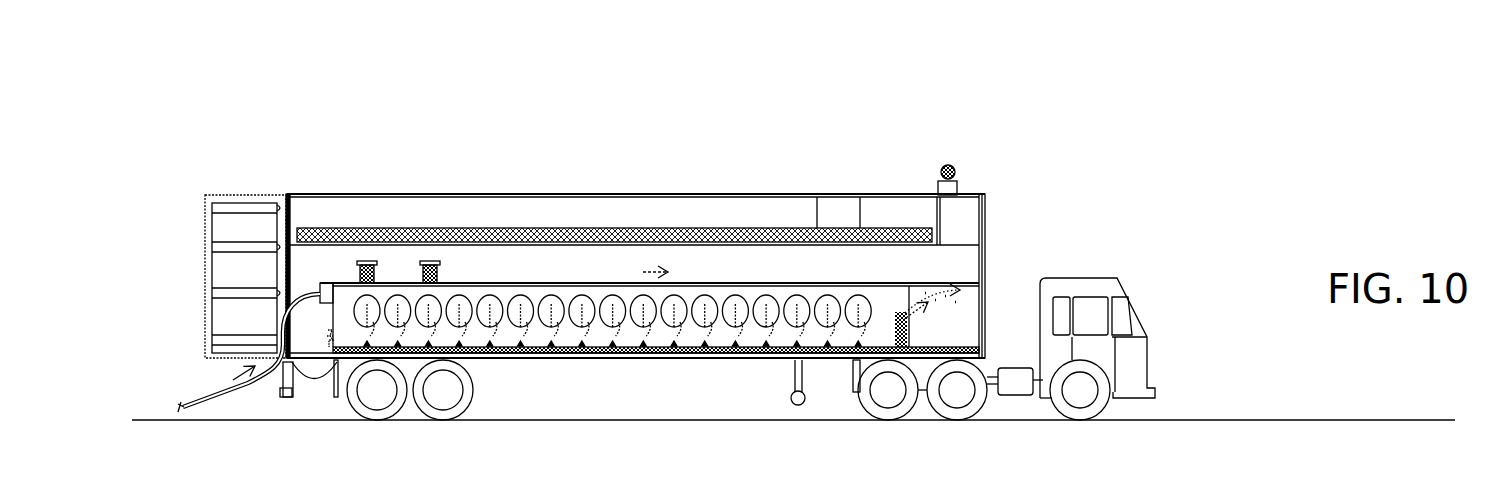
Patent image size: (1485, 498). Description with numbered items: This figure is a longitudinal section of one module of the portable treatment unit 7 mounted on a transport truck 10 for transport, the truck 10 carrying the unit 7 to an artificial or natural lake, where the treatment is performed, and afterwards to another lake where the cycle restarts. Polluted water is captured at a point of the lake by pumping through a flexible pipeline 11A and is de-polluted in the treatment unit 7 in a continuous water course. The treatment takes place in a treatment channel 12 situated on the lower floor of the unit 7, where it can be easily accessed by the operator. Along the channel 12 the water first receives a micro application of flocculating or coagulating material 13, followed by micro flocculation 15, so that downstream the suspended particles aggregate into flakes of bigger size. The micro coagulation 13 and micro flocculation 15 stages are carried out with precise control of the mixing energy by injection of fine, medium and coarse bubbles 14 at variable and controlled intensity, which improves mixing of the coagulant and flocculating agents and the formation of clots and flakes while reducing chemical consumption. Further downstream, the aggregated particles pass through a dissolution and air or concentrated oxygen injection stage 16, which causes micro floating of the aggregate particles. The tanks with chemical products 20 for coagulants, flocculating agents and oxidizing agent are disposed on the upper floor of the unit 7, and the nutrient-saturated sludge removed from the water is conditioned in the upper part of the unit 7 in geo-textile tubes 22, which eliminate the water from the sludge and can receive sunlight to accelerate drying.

The portable treatment unit 7 is at (627, 167).
The transport truck 10 is at (1080, 278).
The flexible pipeline 11A is at (188, 393).
The treatment channel 12 is at (685, 283).
The micro application of flocculating or coagulating material 13 is at (478, 283).
The fine, medium and coarse bubbles 14 is at (535, 340).
The micro flocculation 15 is at (613, 283).
The dissolution and air or concentrated oxygen injection stage 16 is at (913, 335).
The tanks with chemical products 20 is at (845, 195).
The geo-textile tubes 22 is at (798, 227).